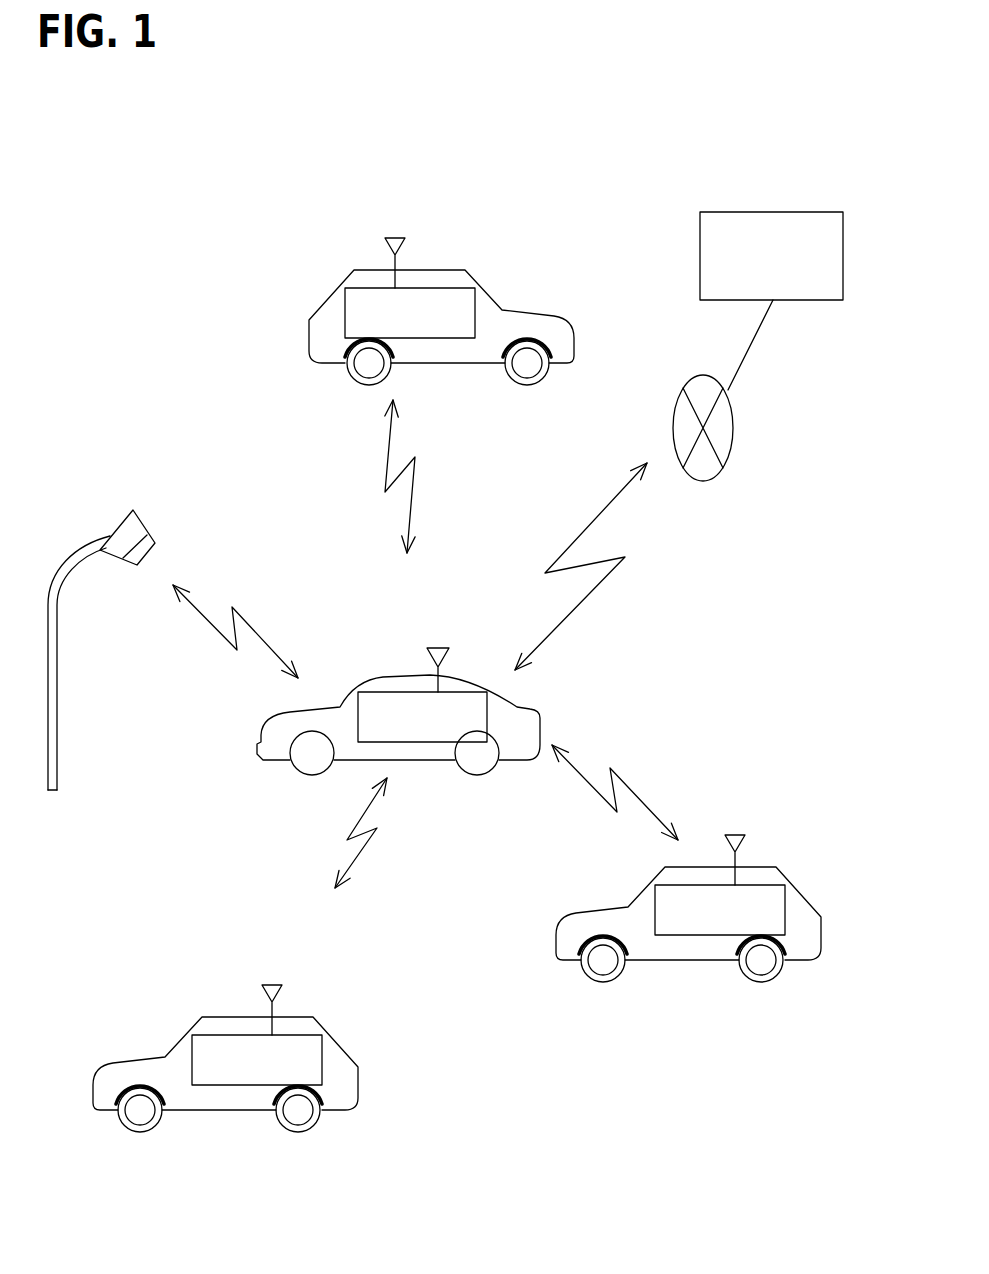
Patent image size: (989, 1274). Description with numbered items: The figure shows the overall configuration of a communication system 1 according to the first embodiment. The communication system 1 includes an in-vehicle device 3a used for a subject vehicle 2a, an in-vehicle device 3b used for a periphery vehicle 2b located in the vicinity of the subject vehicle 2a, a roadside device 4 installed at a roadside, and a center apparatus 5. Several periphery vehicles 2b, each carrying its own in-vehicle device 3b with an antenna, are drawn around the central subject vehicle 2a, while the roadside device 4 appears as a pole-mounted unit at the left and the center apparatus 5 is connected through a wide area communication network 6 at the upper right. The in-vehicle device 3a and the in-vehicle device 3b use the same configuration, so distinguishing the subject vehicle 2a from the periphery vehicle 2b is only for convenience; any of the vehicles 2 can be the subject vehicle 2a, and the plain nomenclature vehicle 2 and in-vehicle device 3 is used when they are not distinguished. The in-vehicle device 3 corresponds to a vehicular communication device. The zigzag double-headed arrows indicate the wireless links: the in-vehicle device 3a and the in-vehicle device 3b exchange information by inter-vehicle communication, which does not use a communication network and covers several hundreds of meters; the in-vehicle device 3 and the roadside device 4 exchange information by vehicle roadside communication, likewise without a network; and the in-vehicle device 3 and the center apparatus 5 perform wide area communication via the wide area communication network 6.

The communication system 1 is at (763, 117).
The vehicle 2 is at (457, 664).
The subject vehicle 2a is at (460, 677).
The periphery vehicle 2b is at (292, 1015).
The in-vehicle device 3 is at (488, 627).
The in-vehicle device 3a is at (402, 692).
The in-vehicle device 3b is at (233, 1033).
The roadside device 4 is at (118, 528).
The center apparatus 5 is at (792, 212).
The wide area communication network 6 is at (733, 422).